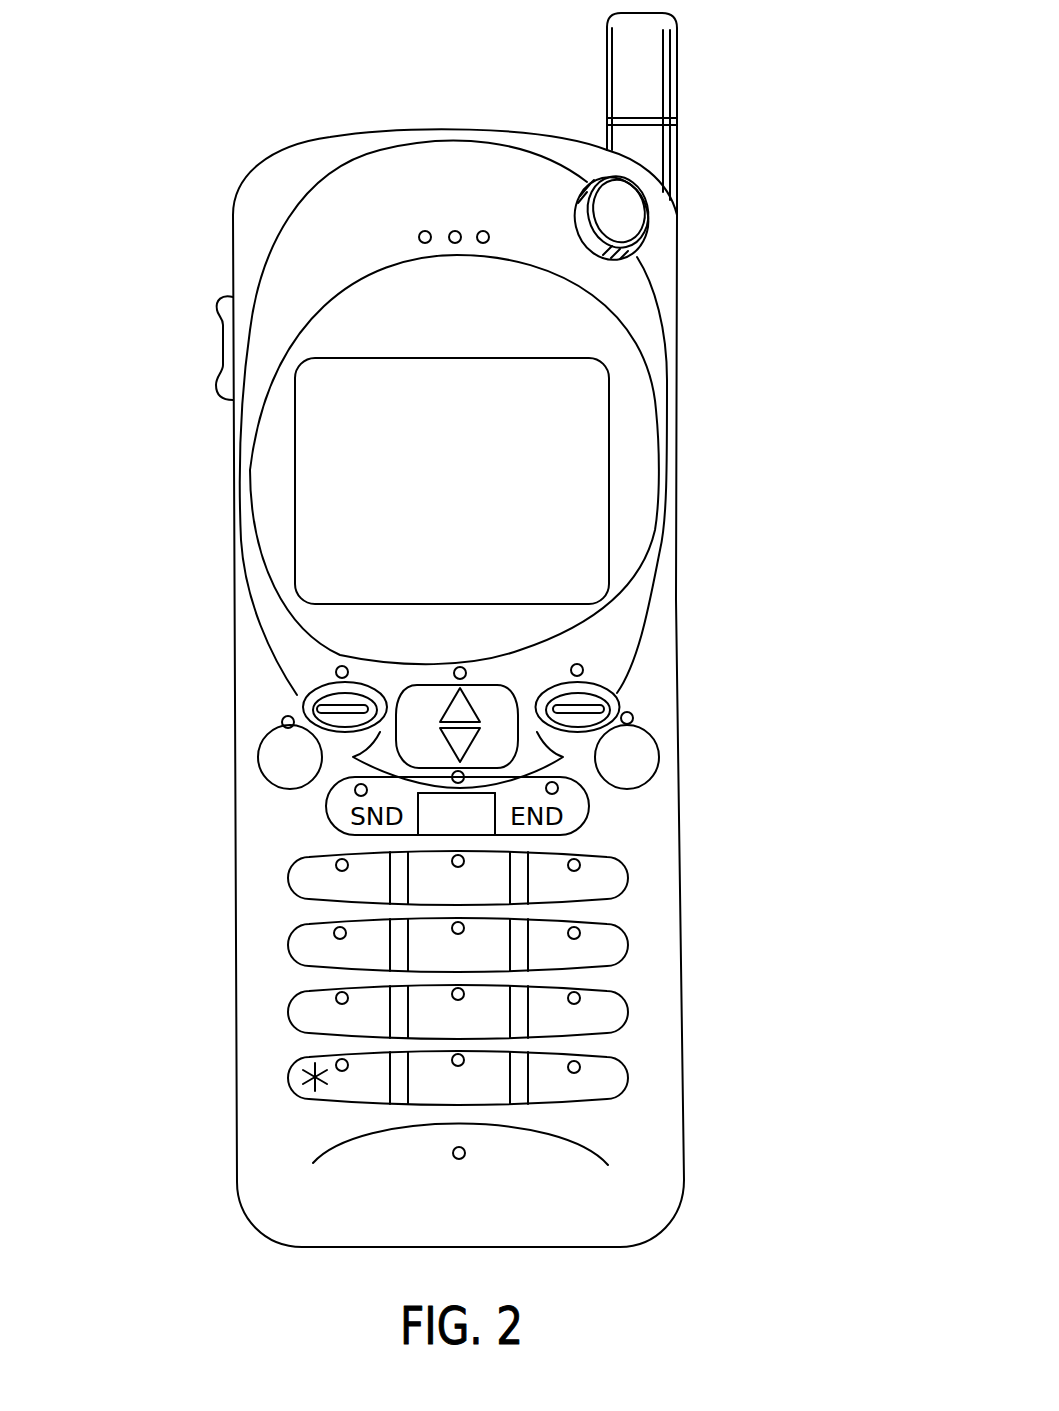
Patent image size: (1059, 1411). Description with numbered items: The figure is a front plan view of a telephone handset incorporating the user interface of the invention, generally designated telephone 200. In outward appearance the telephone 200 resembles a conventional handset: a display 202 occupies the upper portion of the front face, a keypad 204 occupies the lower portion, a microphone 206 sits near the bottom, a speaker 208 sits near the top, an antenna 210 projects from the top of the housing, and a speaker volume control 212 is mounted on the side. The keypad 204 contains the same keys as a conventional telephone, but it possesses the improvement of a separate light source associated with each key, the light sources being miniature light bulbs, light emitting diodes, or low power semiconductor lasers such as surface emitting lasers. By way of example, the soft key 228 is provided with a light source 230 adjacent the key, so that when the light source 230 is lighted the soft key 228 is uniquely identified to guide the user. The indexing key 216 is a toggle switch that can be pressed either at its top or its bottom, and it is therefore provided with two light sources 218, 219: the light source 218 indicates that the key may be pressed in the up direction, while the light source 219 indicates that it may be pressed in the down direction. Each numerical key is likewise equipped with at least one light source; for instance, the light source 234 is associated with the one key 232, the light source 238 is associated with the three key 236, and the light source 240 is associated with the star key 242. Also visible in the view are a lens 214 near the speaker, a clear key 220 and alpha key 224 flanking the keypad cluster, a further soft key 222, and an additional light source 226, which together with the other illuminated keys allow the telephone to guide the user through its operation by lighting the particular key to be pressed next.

The telephone 200 is at (242, 134).
The display 202 is at (573, 342).
The keypad 204 is at (489, 960).
The microphone 206 is at (465, 1157).
The speaker 208 is at (457, 230).
The antenna 210 is at (678, 106).
The speaker volume control 212 is at (222, 337).
The lens 214 is at (633, 217).
The indexing key 216 is at (423, 685).
The light source 218 is at (461, 667).
The light source 219 is at (452, 777).
The clear key 220 is at (258, 757).
The soft key 222 is at (282, 720).
The alpha key 224 is at (659, 758).
The indicator light 226 is at (633, 718).
The soft key 228 is at (619, 700).
The light source 230 is at (583, 668).
The "1" key 232 is at (289, 893).
The light source 234 is at (338, 862).
The "3" key 236 is at (629, 874).
The light source 238 is at (579, 862).
The light source 240 is at (337, 1061).
The "*" key 242 is at (290, 1088).